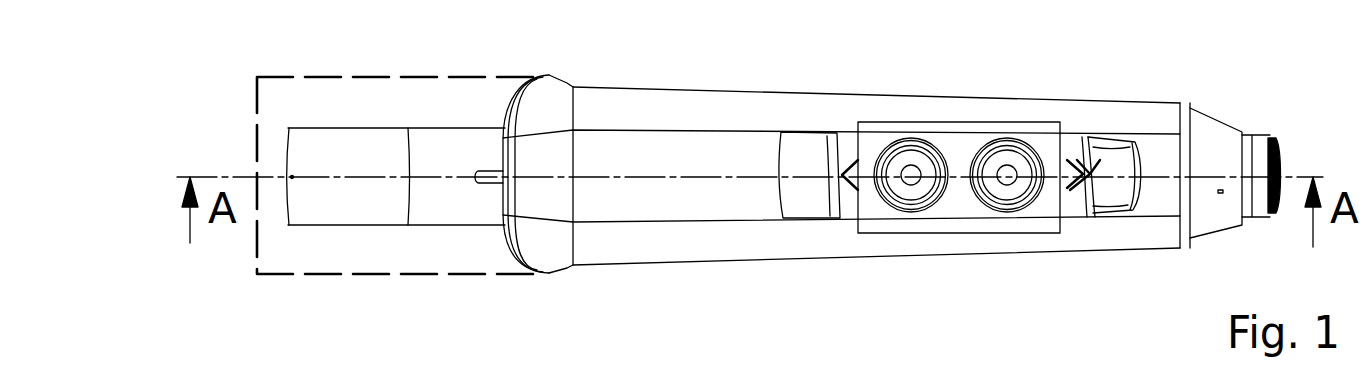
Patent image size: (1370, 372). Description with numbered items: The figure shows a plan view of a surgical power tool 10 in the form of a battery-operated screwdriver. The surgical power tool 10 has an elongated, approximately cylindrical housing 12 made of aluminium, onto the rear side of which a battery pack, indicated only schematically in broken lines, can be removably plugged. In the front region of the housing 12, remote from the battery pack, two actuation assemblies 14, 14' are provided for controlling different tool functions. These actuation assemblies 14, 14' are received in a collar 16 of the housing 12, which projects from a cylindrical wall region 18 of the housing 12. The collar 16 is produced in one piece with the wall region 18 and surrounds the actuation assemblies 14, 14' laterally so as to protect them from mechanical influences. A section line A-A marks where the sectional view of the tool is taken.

The surgical power tool 10 is at (457, 300).
The housing 12 is at (1046, 265).
The actuation assembly 14 is at (1032, 129).
The actuation assembly 14' is at (931, 129).
The collar 16 is at (838, 157).
The cylindrical wall region 18 is at (682, 143).